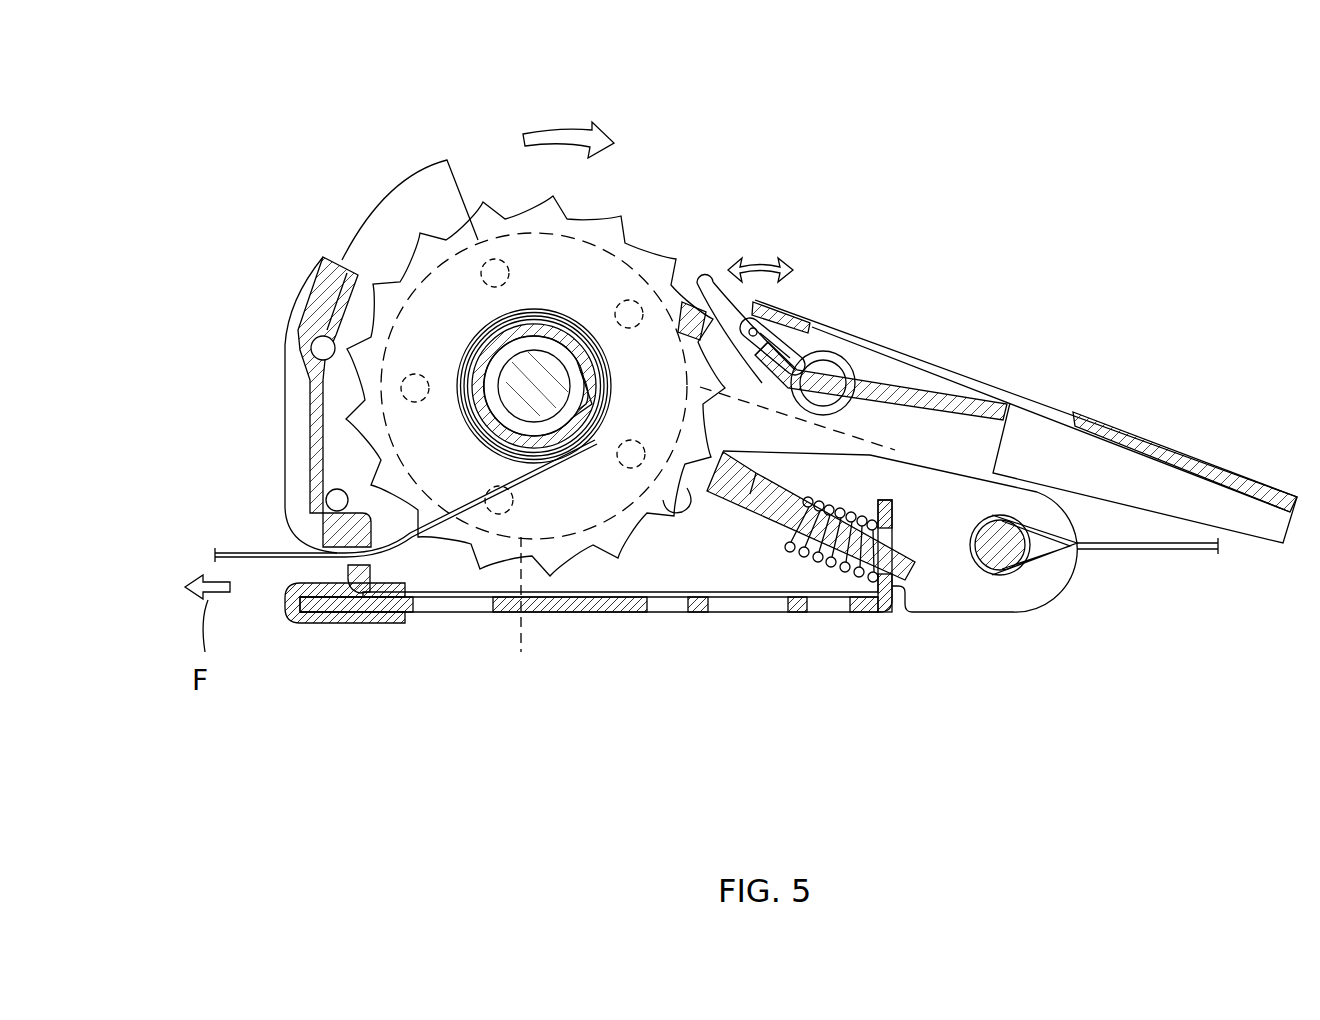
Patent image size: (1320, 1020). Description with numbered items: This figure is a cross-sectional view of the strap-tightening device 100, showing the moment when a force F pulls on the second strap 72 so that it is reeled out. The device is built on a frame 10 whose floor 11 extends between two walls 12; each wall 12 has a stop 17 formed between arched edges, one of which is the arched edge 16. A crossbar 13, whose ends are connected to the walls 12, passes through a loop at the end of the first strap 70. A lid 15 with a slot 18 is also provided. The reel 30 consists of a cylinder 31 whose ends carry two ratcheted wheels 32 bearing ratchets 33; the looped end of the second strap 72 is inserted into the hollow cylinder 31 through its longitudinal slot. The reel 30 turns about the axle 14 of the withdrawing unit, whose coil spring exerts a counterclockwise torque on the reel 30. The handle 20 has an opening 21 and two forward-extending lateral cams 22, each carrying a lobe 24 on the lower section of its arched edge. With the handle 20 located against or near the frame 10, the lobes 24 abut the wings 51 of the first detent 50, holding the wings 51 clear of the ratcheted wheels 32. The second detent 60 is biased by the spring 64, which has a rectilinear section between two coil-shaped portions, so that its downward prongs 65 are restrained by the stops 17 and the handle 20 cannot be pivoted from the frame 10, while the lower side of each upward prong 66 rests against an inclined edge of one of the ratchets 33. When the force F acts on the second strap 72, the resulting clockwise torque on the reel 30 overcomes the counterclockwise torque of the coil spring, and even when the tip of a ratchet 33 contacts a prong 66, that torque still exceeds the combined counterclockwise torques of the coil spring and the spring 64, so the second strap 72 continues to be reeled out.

The strap-tightening device 100 is at (1060, 168).
The frame 10 is at (600, 614).
The floor 11 is at (352, 600).
The walls 12 is at (1050, 573).
The crossbar 13 is at (1012, 567).
The axle 14 is at (468, 446).
The lid 15 is at (300, 385).
The arched edge 16 is at (585, 237).
The stop 17 is at (662, 297).
The slot 18 is at (375, 562).
The handle 20 is at (1190, 462).
The opening 21 is at (1062, 420).
The cams 22 is at (523, 617).
The lobe 24 is at (687, 490).
The reel 30 is at (522, 180).
The cylinder 31 is at (480, 307).
The ratcheted wheels 32 is at (453, 238).
The ratchets 33 is at (467, 203).
The first detent 50 is at (923, 573).
The wings 51 is at (730, 492).
The second detent 60 is at (900, 383).
The spring 64 is at (787, 312).
The prong 65 is at (697, 320).
The prong 66 is at (711, 287).
The first strap 70 is at (1177, 552).
The second strap 72 is at (250, 548).